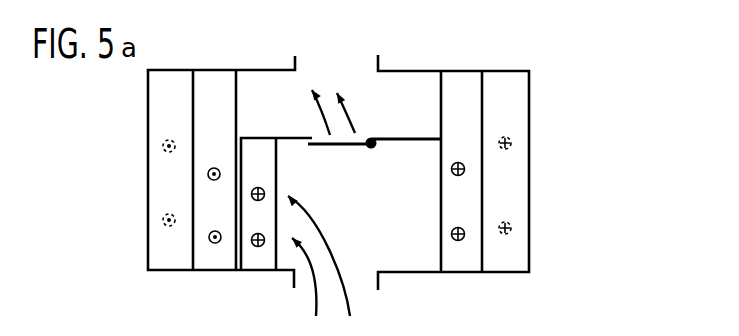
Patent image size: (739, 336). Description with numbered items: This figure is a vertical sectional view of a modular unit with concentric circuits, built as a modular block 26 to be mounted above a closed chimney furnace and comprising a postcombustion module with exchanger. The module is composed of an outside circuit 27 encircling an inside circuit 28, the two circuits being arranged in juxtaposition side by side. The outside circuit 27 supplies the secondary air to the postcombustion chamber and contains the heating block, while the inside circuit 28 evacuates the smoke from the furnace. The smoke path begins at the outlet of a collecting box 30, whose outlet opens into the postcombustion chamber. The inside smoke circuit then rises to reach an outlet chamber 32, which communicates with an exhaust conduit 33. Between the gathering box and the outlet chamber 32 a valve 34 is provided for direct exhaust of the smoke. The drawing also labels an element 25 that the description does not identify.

The louver blade 25 is at (260, 168).
The modular block 26 is at (543, 240).
The outside circuit 27 is at (505, 191).
The inside circuit 28 is at (447, 118).
The collecting box 30 is at (398, 249).
The outlet chamber 32 is at (390, 104).
The exhaust conduit 33 is at (326, 75).
The valve 34 is at (354, 153).